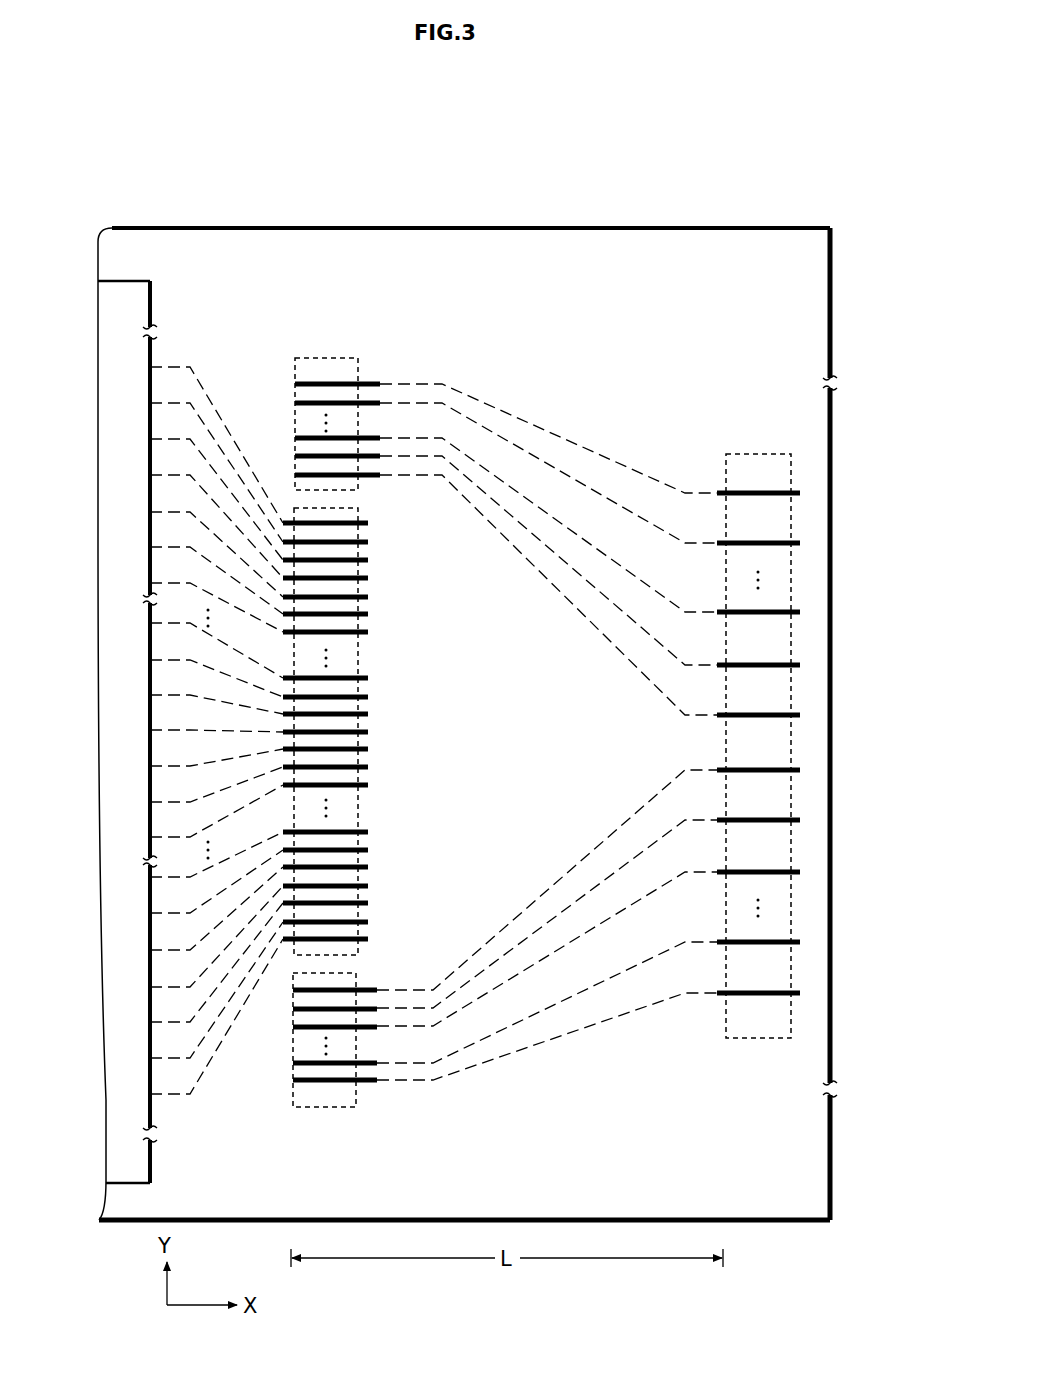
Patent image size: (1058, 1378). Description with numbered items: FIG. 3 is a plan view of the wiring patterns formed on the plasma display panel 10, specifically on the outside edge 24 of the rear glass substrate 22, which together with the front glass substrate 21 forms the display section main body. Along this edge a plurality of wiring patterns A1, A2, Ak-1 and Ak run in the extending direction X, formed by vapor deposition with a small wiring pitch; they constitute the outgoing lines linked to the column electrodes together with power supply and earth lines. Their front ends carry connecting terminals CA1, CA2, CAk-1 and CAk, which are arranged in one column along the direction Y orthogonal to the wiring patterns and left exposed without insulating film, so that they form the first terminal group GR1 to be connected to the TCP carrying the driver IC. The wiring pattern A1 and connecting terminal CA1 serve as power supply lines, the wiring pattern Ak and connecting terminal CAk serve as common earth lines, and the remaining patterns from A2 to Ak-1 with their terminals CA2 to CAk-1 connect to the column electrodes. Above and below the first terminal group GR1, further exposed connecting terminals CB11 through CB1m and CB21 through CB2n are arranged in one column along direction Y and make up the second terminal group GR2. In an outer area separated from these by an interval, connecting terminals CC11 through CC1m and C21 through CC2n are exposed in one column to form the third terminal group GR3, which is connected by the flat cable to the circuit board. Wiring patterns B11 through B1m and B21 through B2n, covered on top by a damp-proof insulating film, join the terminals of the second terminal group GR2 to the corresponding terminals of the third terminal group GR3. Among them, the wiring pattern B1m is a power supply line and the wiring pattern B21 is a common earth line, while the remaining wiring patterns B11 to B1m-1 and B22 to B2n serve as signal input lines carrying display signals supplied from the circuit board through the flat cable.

The plasma display panel 10 is at (327, 204).
The front glass substrate 21 is at (153, 292).
The rear glass substrate 22 is at (443, 226).
The outside edge 24 is at (592, 268).
The wiring pattern A1 is at (207, 385).
The wiring pattern A2 is at (228, 458).
The wiring pattern Ak-1 is at (221, 1007).
The wiring pattern Ak is at (199, 1087).
The first terminal group GR1 is at (365, 660).
The second terminal group GR2 is at (316, 354).
The third terminal group GR3 is at (758, 452).
The connecting terminal CA1 is at (340, 523).
The connecting terminal CA2 is at (340, 545).
The connecting terminal CAk-1 is at (340, 921).
The connecting terminal CAk is at (338, 937).
The connecting terminal CB11 is at (335, 383).
The connecting terminal CB1m is at (343, 477).
The connecting terminal CB21 is at (338, 990).
The connecting terminal CB2n is at (332, 1081).
The wiring pattern B11 is at (601, 456).
The wiring pattern B1m-1 is at (520, 529).
The wiring pattern B1m is at (560, 598).
The wiring pattern B21 is at (580, 860).
The wiring pattern B22 is at (520, 943).
The wiring pattern B2n is at (620, 1015).
The connecting terminal CC11 is at (768, 492).
The connecting terminal CC1m is at (770, 714).
The connecting terminal C21 is at (770, 769).
The connecting terminal CC2n is at (768, 992).